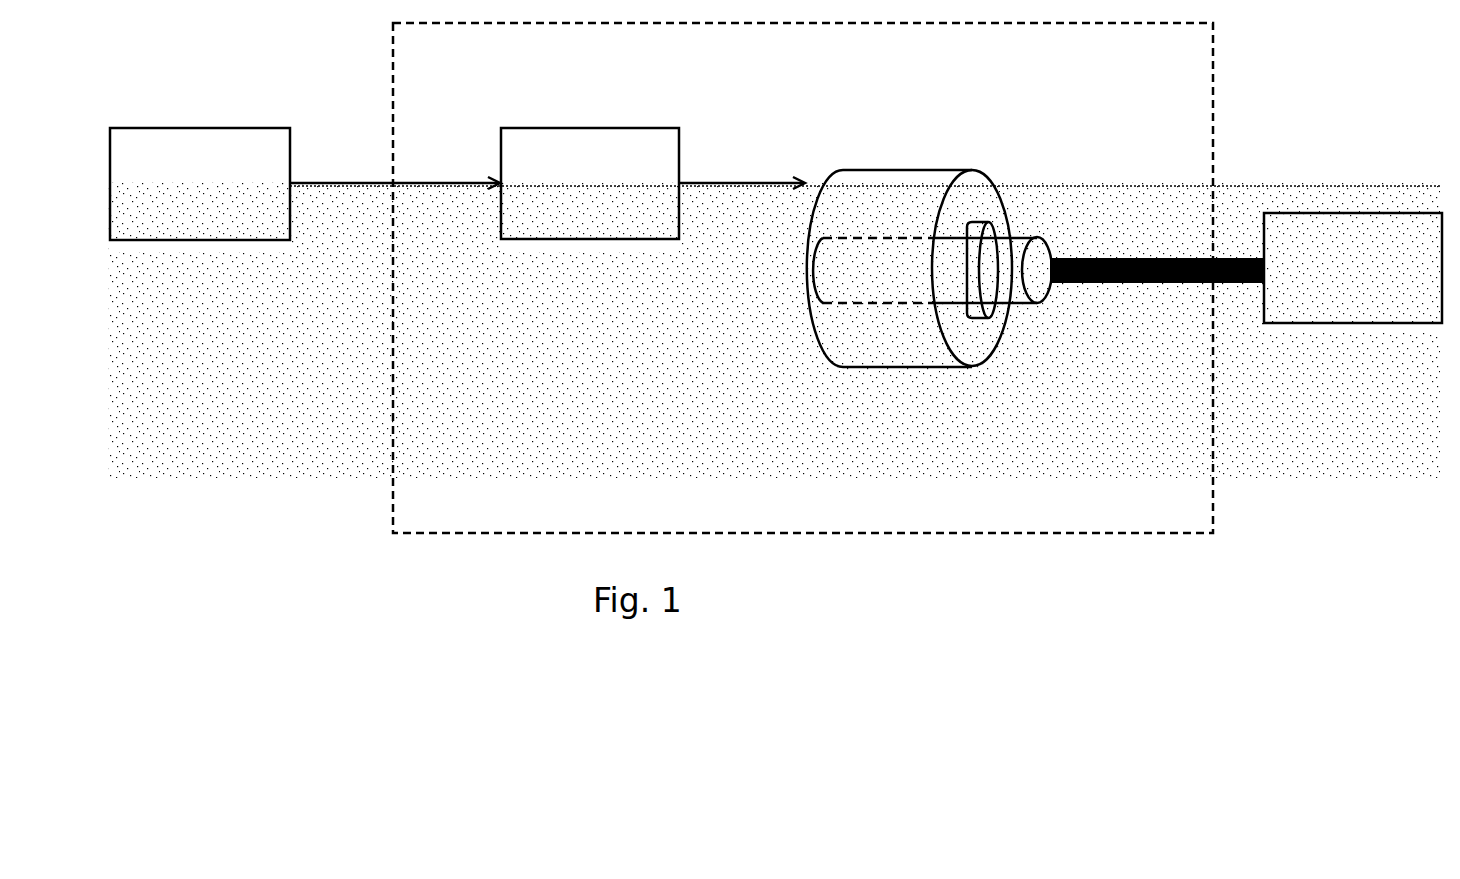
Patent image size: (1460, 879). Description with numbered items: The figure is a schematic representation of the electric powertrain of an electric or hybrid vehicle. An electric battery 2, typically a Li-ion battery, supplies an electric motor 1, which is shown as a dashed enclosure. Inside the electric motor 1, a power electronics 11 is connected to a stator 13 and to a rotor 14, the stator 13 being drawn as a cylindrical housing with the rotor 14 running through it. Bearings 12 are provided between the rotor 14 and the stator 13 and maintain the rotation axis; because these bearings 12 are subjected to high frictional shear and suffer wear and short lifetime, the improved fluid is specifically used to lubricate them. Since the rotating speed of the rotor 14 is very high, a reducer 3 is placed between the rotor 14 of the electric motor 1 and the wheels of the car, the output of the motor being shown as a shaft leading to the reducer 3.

The electric motor 1 is at (1189, 553).
The electric battery 2 is at (200, 240).
The reducer 3 is at (1353, 323).
The power electronics 11 is at (590, 240).
The bearings 12 is at (983, 323).
The stator 13 is at (908, 173).
The rotor 14 is at (1025, 272).